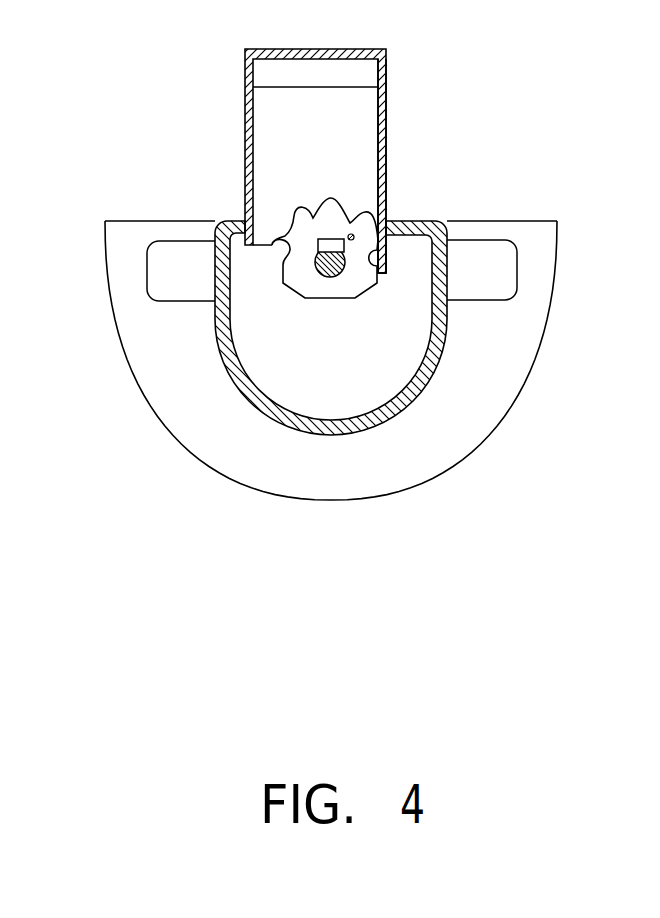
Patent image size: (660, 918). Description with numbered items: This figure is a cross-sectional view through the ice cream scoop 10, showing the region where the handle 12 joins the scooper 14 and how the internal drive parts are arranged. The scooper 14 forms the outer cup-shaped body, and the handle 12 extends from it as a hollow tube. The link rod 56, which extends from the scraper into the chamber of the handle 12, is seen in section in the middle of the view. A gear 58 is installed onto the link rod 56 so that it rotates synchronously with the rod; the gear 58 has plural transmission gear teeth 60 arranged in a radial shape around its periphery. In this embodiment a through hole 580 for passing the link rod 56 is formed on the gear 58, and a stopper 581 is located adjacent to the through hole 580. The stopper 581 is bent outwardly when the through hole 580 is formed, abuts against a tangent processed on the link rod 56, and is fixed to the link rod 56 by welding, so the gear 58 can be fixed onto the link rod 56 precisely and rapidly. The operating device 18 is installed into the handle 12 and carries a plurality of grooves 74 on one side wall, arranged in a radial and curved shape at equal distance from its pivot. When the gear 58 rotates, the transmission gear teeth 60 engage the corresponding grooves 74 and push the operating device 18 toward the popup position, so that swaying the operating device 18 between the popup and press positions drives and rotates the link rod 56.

The ice cream scoop 10 is at (360, 276).
The handle 12 is at (413, 402).
The scooper 14 is at (523, 357).
The operating device 18 is at (244, 119).
The link rod 56 is at (333, 243).
The gear 58 is at (360, 284).
The transmission gear teeth 60 is at (384, 243).
The grooves 74 is at (387, 140).
The through hole 580 is at (320, 277).
The stopper 581 is at (317, 240).